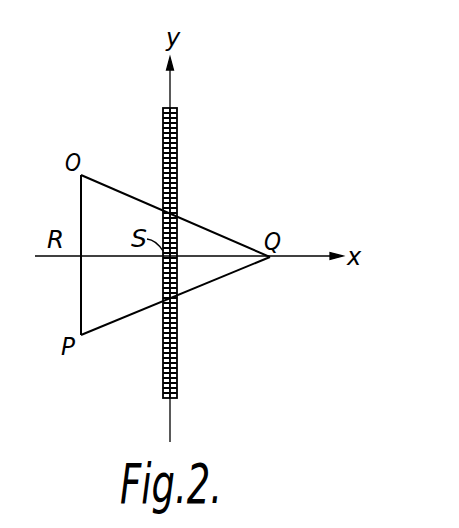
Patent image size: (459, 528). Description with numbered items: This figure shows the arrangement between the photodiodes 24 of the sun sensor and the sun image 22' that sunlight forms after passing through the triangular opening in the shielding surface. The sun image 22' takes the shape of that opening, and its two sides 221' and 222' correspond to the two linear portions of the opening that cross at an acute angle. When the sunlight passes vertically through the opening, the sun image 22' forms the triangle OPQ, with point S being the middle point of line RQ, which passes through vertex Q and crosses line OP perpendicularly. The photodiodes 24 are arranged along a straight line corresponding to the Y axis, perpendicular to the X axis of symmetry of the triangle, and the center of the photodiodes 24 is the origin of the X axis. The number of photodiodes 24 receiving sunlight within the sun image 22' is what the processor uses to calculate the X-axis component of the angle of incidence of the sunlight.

The sun image 22' is at (181, 241).
The side of sun image 221' is at (177, 216).
The side of sun image 222' is at (181, 296).
The photodiodes 24 is at (177, 348).